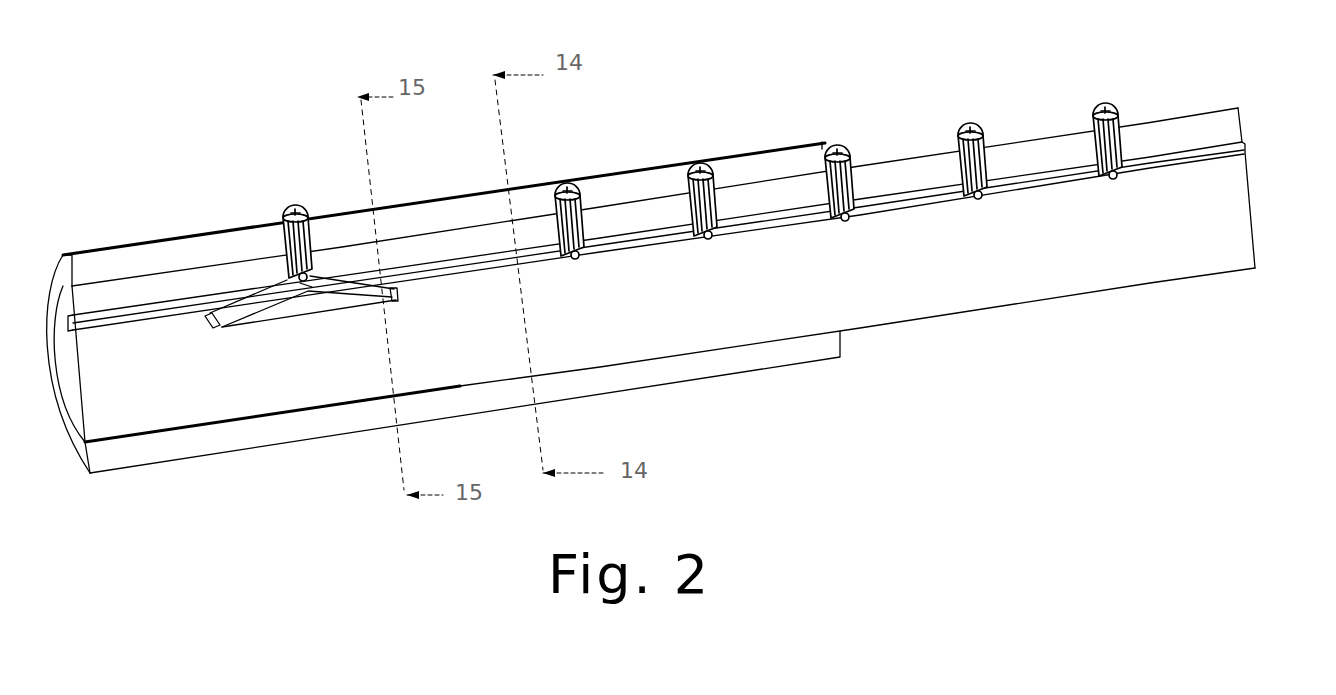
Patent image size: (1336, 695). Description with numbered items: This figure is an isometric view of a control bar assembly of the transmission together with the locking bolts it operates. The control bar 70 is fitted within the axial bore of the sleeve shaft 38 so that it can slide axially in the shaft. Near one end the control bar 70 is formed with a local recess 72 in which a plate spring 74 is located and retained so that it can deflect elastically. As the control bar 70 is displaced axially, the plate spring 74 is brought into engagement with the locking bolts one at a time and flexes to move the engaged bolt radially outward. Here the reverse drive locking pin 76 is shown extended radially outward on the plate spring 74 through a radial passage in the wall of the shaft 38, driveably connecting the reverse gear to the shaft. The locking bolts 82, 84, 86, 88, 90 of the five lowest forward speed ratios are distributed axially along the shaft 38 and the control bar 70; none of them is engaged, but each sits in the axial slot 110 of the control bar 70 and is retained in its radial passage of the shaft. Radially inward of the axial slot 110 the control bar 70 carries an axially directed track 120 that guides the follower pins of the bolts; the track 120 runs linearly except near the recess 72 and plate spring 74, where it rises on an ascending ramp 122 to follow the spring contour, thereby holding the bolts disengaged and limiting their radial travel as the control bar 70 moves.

The sleeve shaft 38 is at (162, 242).
The control bar 70 is at (1228, 207).
The local recess 72 is at (212, 318).
The plate spring 74 is at (327, 290).
The reverse drive locking pin 76 is at (293, 205).
The locking bolt 82 is at (562, 183).
The locking bolt 84 is at (700, 163).
The locking bolt 86 is at (837, 145).
The locking bolt 88 is at (970, 123).
The locking bolt 90 is at (1107, 103).
The axial slot 110 is at (897, 173).
The axial track 120 is at (1027, 177).
The ascending ramp 122 is at (342, 270).